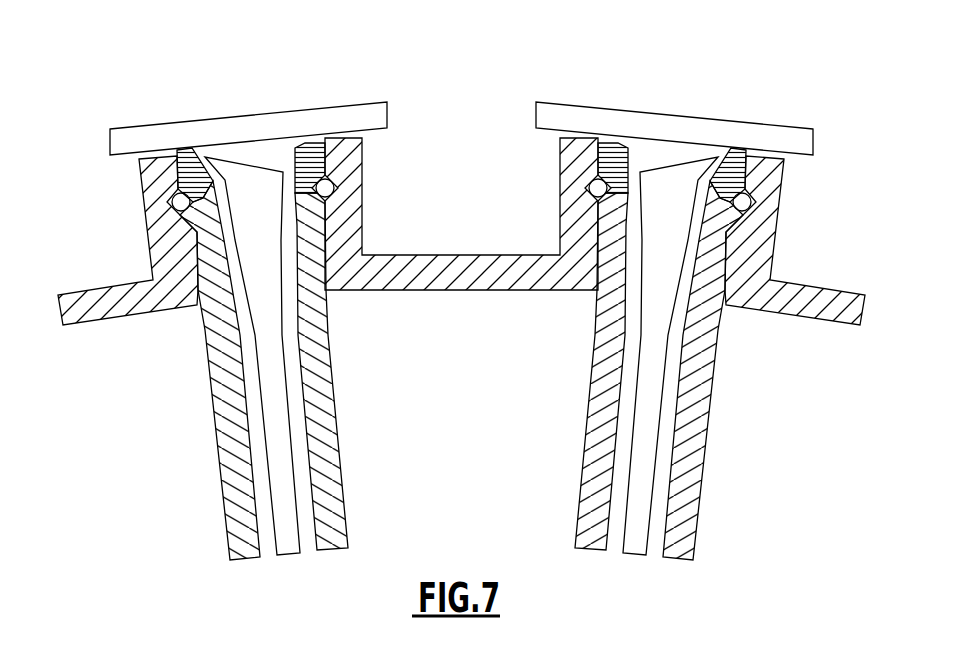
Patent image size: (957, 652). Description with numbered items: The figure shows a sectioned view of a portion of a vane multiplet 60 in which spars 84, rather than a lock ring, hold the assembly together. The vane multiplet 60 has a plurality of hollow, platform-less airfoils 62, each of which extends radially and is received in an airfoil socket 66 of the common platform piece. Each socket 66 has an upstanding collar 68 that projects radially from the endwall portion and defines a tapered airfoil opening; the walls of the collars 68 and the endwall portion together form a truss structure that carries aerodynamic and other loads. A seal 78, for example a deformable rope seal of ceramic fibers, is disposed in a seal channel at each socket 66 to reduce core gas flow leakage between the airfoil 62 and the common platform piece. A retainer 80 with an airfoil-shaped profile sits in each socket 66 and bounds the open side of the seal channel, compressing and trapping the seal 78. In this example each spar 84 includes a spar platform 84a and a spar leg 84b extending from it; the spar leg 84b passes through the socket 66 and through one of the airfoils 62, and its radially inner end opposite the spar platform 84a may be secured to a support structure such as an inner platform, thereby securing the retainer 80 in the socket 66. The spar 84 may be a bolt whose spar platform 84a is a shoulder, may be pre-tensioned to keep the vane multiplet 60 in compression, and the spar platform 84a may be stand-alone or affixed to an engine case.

The vane multiplet 60 is at (190, 463).
The airfoil 62 is at (582, 493).
The airfoil socket 66 is at (150, 241).
The upstanding collar 68 is at (562, 222).
The seal 78 is at (334, 192).
The retainer 80 is at (210, 165).
The spar 84 is at (435, 295).
The spar platform 84a is at (137, 140).
The spar leg 84b is at (290, 405).